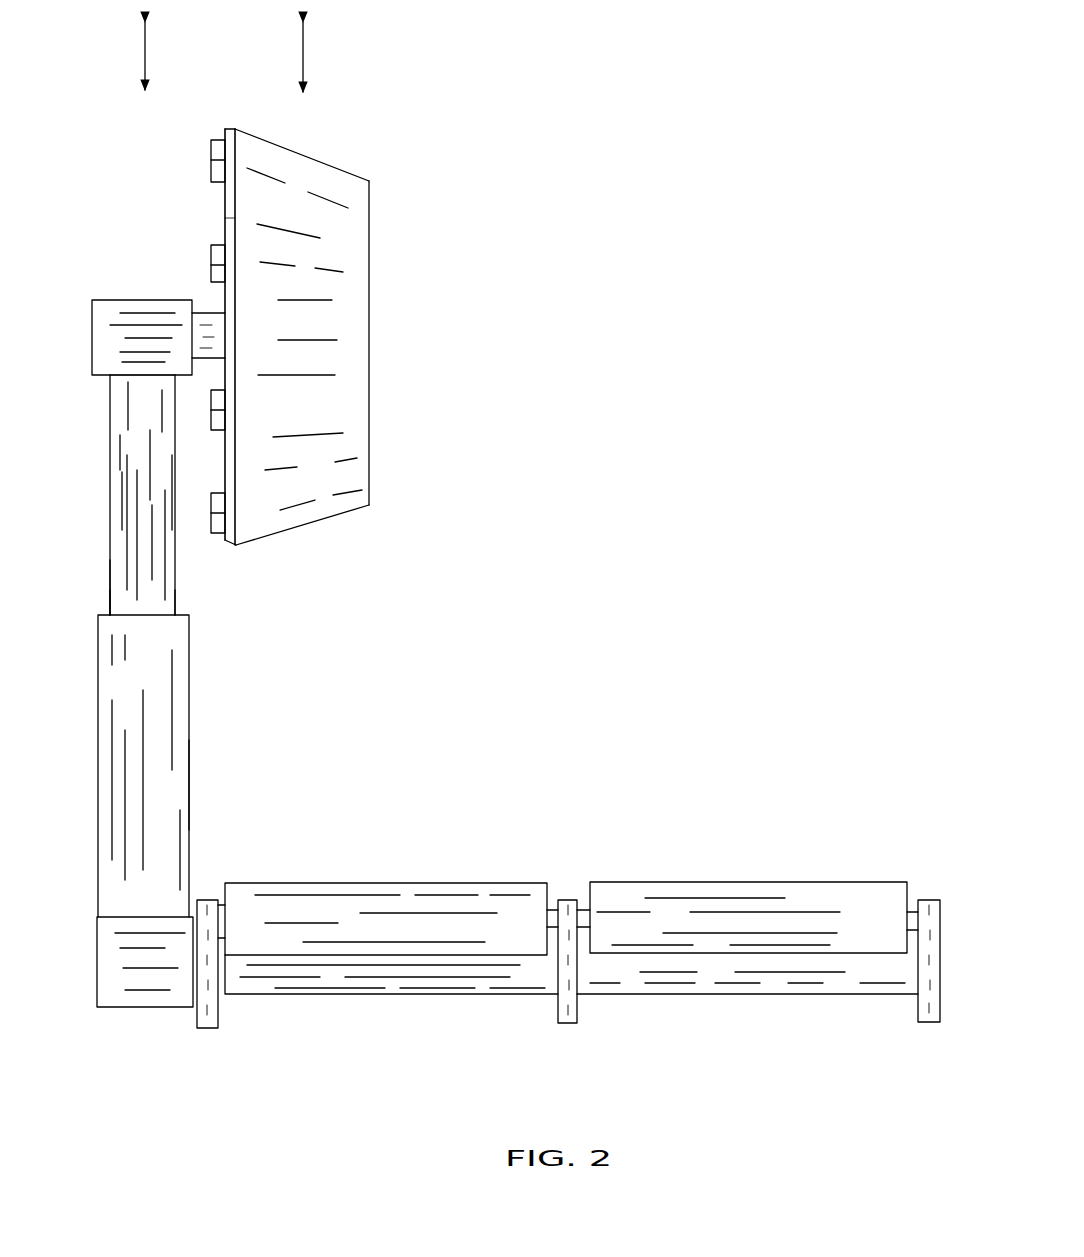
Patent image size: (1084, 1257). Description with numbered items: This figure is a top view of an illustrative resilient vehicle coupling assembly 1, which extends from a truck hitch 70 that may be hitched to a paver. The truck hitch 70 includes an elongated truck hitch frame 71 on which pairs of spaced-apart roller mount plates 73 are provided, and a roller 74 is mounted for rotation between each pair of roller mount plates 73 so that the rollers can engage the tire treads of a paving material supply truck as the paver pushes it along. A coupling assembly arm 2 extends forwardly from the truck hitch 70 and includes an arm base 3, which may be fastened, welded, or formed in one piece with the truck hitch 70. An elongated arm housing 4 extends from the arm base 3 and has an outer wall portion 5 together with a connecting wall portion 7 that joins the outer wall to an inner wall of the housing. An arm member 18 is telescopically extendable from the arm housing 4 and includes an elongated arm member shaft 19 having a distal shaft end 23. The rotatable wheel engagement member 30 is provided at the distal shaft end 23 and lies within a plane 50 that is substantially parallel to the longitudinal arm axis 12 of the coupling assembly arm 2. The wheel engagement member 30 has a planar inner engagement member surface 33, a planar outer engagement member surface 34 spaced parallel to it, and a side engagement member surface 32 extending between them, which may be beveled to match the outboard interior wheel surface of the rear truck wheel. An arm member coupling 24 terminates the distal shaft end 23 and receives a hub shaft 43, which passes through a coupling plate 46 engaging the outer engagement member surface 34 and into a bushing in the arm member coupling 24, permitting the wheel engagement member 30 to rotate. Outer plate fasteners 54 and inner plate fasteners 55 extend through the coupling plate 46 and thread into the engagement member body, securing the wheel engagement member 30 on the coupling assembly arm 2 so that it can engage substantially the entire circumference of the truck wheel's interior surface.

The vehicle coupling assembly 1 is at (443, 186).
The coupling assembly arm 2 is at (199, 827).
The arm base 3 is at (153, 985).
The arm housing 4 is at (192, 733).
The outer wall portion 5 is at (180, 783).
The connecting wall portion 7 is at (110, 612).
The longitudinal arm axis 12 is at (145, 50).
The arm member 18 is at (111, 477).
The arm member shaft 19 is at (148, 597).
The distal shaft end 23 is at (107, 380).
The arm member coupling 24 is at (118, 300).
The wheel engagement member 30 is at (306, 358).
The side engagement member surface 32 is at (308, 523).
The inner engagement member surface 33 is at (369, 457).
The outer engagement member surface 34 is at (223, 200).
The hub shaft 43 is at (203, 323).
The coupling plate 46 is at (225, 218).
The plane 50 is at (303, 62).
The outer plate fasteners 54 is at (210, 150).
The inner plate fasteners 55 is at (214, 247).
The truck hitch 70 is at (561, 899).
The truck hitch frame 71 is at (447, 988).
The roller mount plates 73 is at (204, 1028).
The roller 74 is at (398, 893).